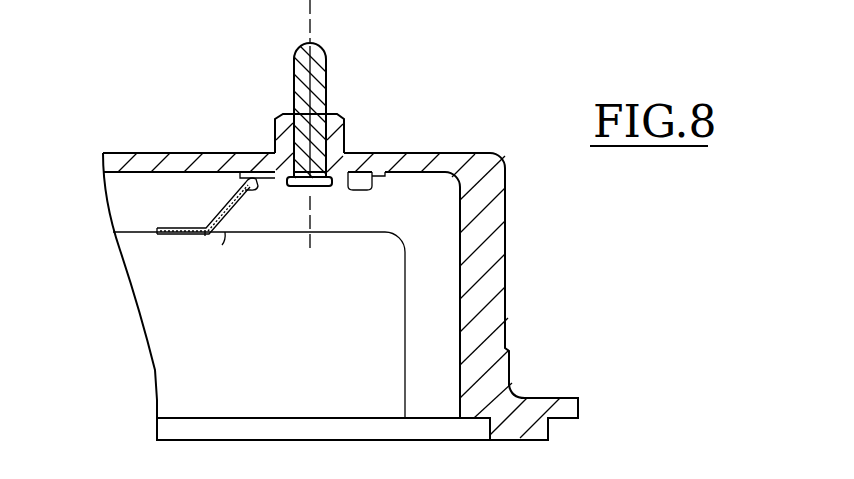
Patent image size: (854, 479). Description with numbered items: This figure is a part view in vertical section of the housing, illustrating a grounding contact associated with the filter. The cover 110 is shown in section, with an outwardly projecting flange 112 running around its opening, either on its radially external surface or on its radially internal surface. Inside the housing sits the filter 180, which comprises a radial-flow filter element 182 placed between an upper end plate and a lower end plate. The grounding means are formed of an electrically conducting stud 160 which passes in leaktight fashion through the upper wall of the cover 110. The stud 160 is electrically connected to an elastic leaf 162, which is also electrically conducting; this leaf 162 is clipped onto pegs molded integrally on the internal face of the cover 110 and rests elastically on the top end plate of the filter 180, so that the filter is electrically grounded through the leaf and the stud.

The cover 110 is at (449, 165).
The flange 112 is at (560, 407).
The electrically conducting stud 160 is at (317, 72).
The elastic leaf 162 is at (213, 208).
The filter 180 is at (178, 325).
The radial-flow filter element 182 is at (225, 236).